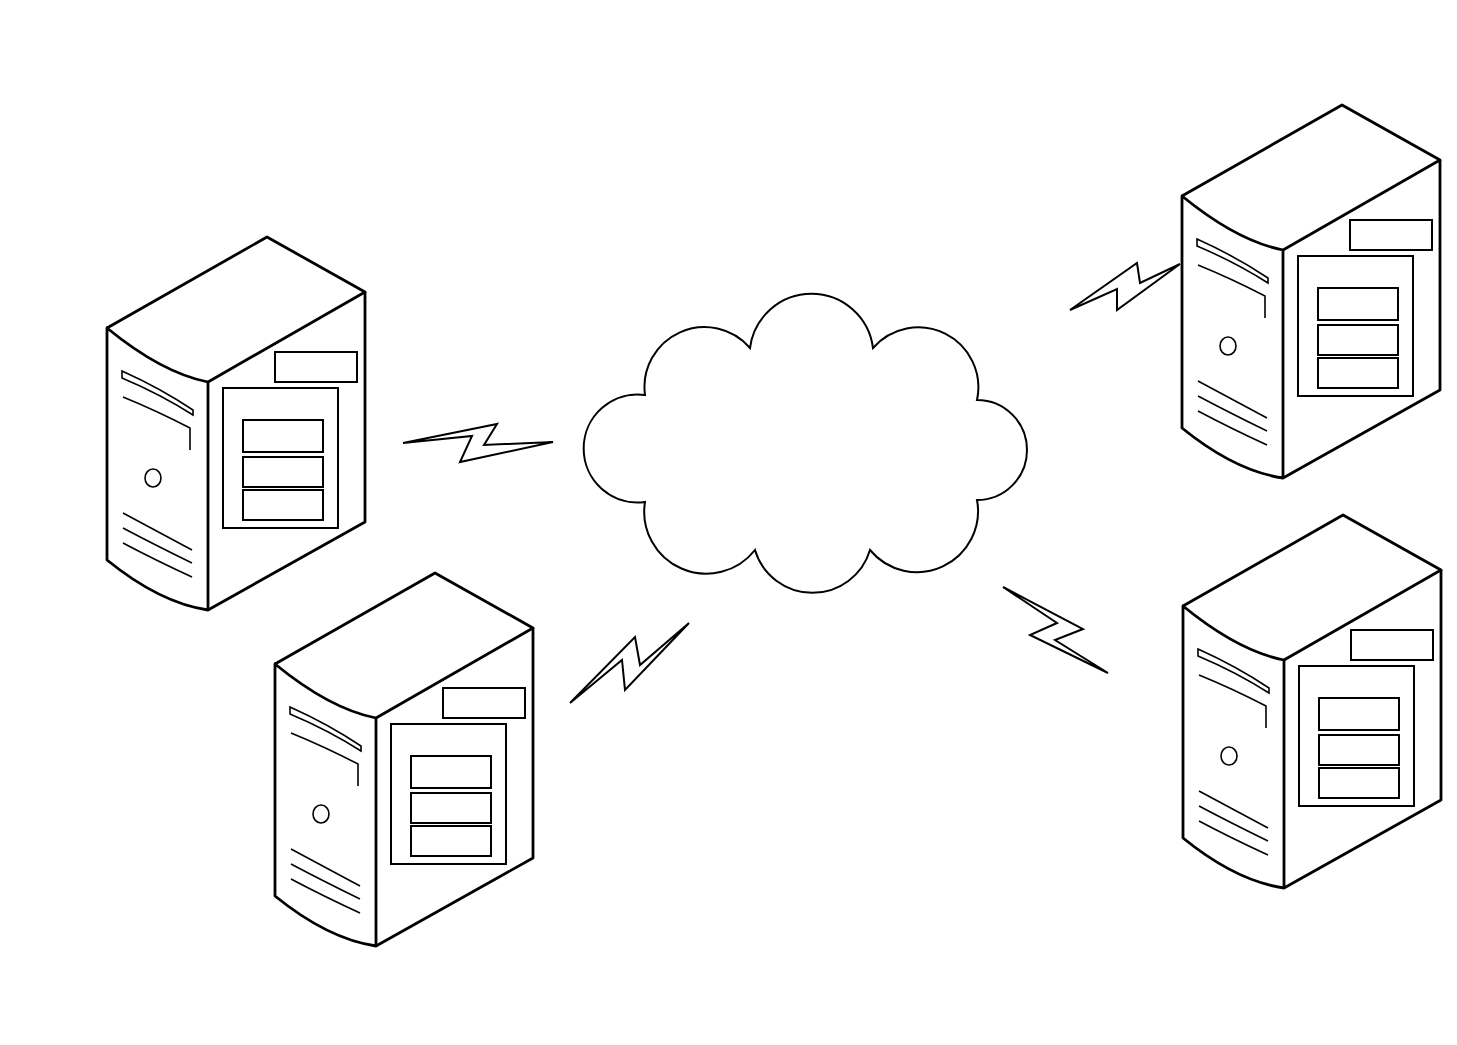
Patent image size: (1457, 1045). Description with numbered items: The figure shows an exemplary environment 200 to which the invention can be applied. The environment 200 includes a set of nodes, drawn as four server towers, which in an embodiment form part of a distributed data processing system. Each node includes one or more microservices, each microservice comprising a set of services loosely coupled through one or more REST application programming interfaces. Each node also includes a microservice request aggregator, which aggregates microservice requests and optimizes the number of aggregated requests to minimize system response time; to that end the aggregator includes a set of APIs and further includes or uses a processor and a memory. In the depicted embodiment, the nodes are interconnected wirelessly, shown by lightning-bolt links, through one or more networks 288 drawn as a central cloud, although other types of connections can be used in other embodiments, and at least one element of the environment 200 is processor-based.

The environment 200 is at (206, 70).
The network 288 is at (790, 472).